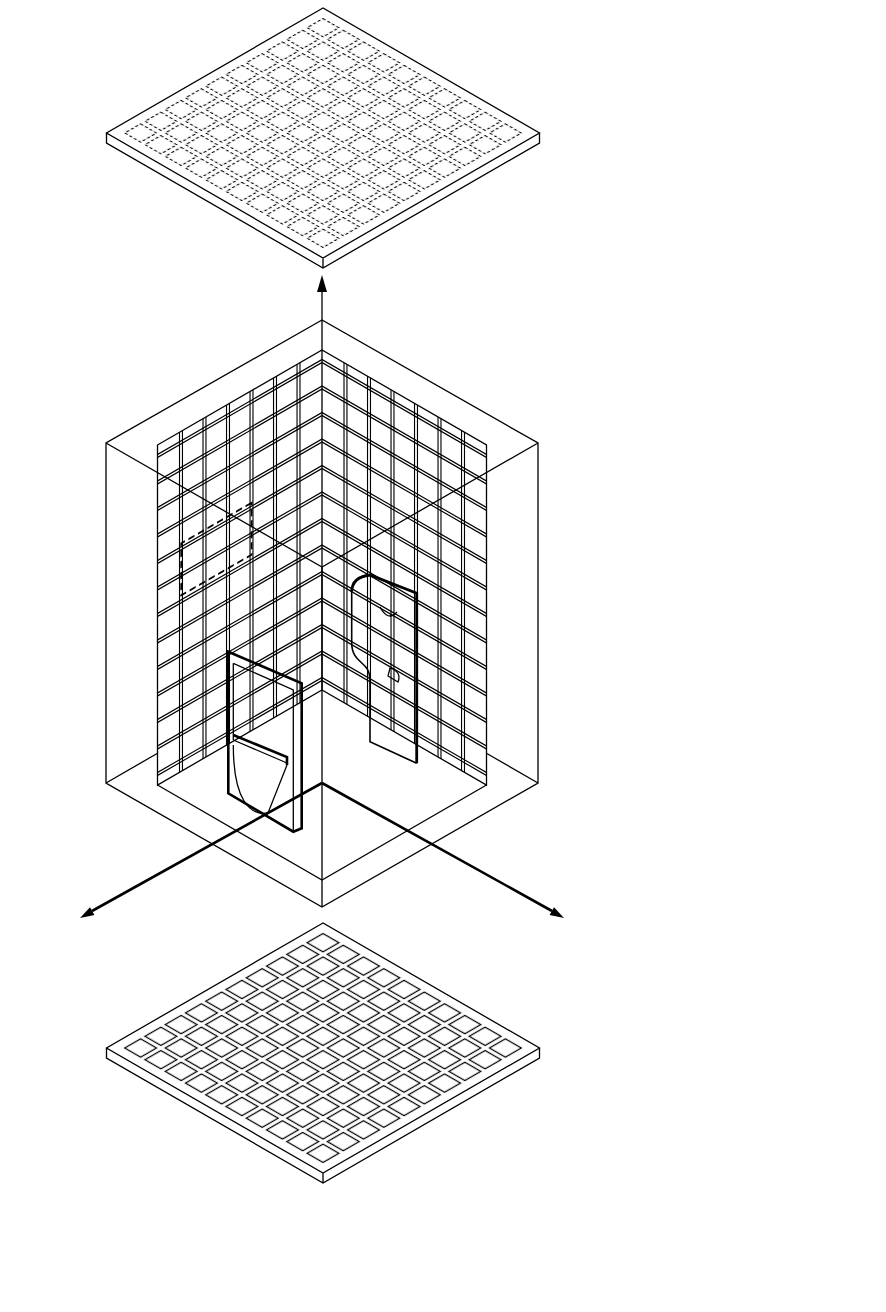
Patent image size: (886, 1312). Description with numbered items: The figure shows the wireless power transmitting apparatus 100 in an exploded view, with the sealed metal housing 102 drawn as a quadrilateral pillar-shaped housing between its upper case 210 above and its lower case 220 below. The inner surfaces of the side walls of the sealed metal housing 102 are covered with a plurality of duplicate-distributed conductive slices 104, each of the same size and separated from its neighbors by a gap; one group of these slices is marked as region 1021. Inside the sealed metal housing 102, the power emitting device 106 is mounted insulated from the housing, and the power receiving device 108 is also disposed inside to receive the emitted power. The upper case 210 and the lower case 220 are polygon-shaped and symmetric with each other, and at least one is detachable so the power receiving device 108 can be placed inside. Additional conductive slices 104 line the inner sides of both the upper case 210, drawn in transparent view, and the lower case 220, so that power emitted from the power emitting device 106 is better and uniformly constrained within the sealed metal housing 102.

The wireless power transmitting apparatus 100 is at (550, 290).
The sealed metal housing 102 is at (432, 380).
The region 1021 is at (160, 572).
The conductive slices 104 is at (163, 125).
The power emitting device 106 is at (393, 733).
The power receiving device 108 is at (228, 793).
The upper case 210 is at (450, 77).
The lower case 220 is at (522, 1037).